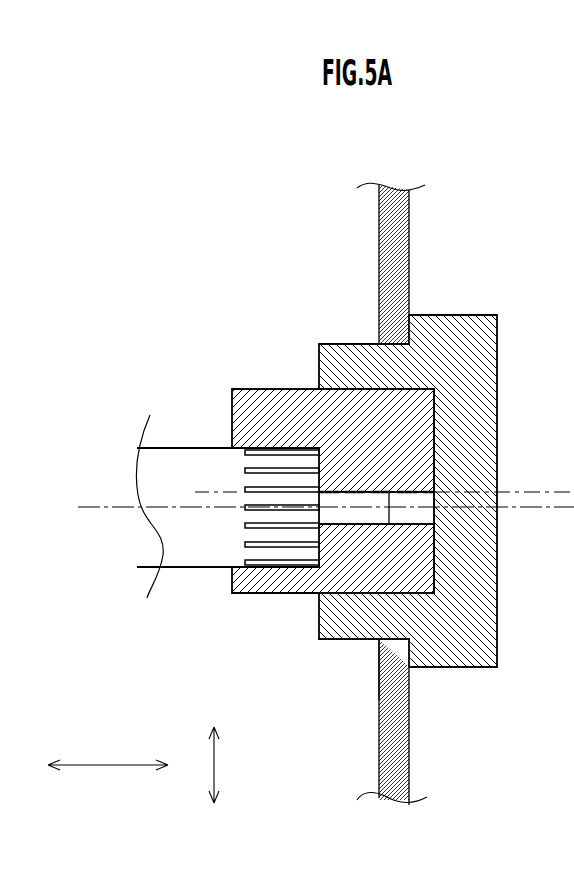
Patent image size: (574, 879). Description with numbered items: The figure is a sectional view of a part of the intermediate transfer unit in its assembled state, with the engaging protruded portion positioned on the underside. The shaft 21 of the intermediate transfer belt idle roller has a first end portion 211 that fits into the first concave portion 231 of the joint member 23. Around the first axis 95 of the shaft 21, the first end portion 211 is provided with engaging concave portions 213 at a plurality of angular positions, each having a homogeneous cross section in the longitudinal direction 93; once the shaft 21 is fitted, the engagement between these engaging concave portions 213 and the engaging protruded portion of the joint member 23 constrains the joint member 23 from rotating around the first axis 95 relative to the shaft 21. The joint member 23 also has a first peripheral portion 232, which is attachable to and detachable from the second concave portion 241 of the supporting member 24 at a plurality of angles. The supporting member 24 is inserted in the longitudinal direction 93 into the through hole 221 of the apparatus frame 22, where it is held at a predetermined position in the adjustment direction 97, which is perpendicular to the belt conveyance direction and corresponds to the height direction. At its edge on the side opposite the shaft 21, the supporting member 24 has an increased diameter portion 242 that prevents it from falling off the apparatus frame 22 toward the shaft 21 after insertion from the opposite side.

The shaft 21 is at (158, 457).
The first end portion 211 is at (173, 567).
The engaging concave portion 213 is at (243, 545).
The apparatus frame 22 is at (409, 218).
The through hole 221 is at (388, 643).
The joint member 23 is at (245, 387).
The first concave portion 231 is at (272, 568).
The first peripheral portion 232 is at (285, 387).
The supporting member 24 is at (497, 342).
The second concave portion 241 is at (440, 553).
The increased diameter portion 242 is at (457, 315).
The longitudinal direction 93 is at (108, 751).
The first axis 95 is at (87, 507).
The adjustment direction 97 is at (228, 765).